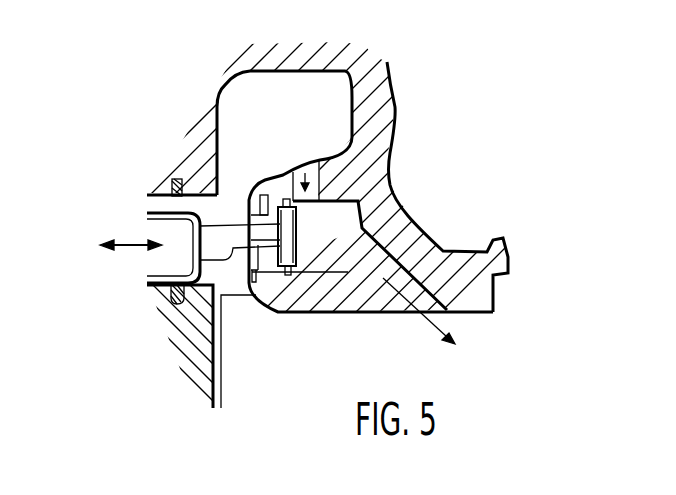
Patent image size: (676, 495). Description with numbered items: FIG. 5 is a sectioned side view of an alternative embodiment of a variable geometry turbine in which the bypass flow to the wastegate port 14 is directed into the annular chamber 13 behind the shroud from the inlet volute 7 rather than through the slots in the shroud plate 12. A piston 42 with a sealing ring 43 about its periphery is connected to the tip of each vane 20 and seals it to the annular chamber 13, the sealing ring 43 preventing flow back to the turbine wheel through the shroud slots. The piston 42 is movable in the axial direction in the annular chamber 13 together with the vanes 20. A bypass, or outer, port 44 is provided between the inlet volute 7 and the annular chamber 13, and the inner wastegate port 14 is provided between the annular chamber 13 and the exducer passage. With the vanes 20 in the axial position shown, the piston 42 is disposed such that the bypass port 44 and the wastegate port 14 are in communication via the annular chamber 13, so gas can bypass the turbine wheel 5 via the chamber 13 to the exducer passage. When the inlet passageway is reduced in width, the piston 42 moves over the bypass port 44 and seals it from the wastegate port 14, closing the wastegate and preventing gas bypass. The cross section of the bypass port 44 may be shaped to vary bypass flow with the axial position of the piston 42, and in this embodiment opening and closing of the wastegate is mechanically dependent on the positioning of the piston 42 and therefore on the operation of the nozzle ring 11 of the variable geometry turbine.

The turbine wheel 5 is at (232, 377).
The inlet volute 7 is at (223, 80).
The nozzle ring 11 is at (145, 207).
The shroud plate 12 is at (250, 292).
The annular chamber 13 is at (341, 219).
The wastegate port 14 is at (430, 300).
The vane 20 is at (227, 235).
The piston 42 is at (290, 237).
The sealing ring 43 is at (288, 270).
The bypass port 44 is at (315, 170).